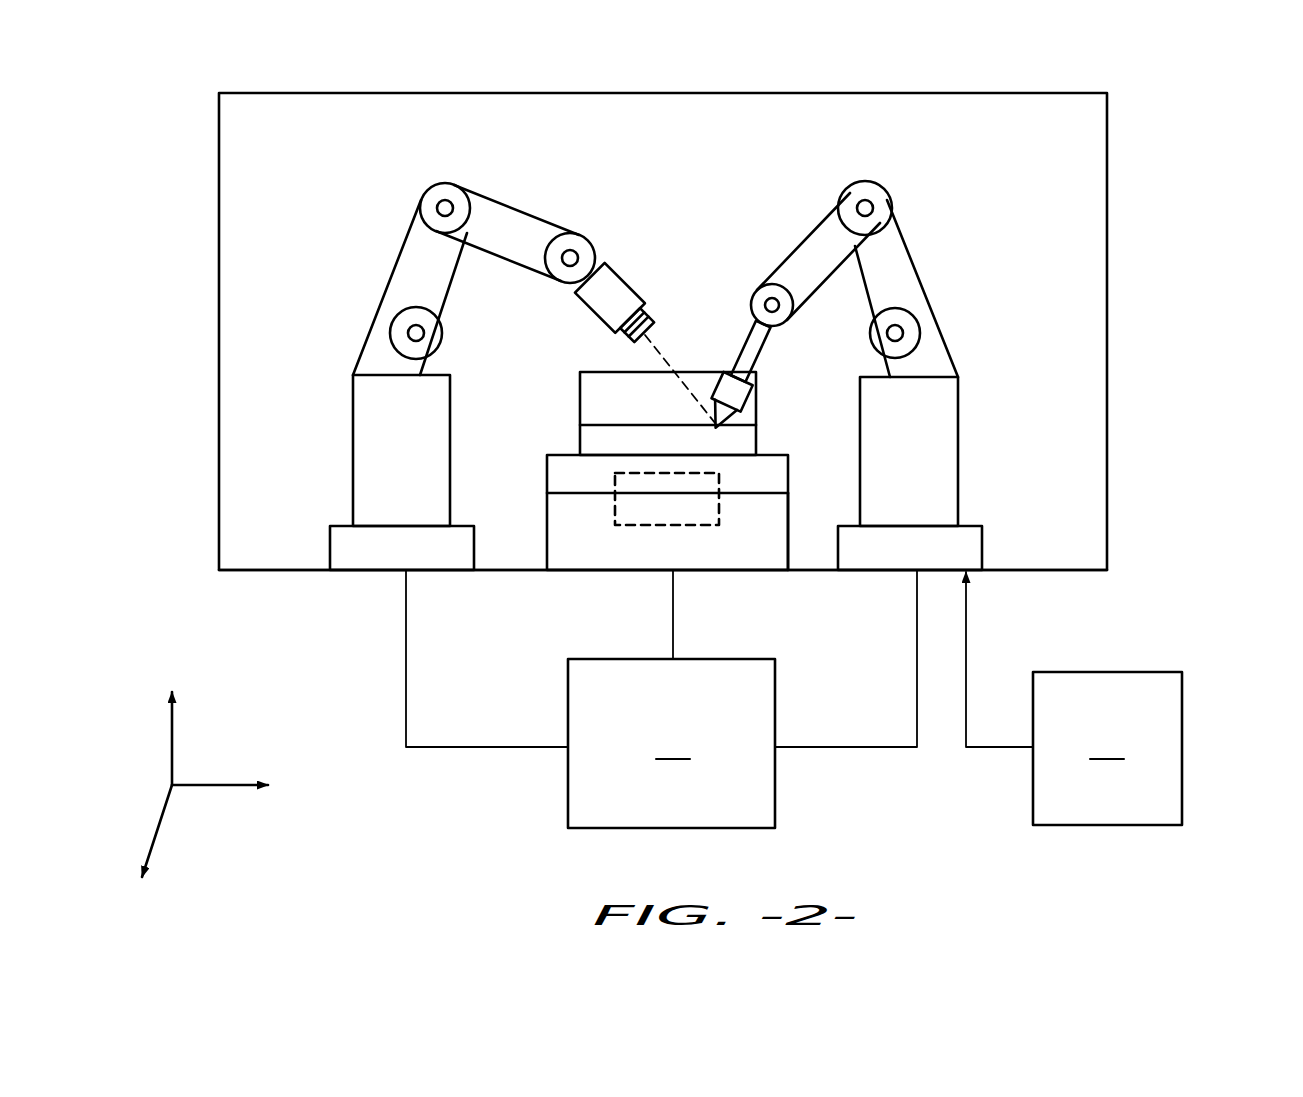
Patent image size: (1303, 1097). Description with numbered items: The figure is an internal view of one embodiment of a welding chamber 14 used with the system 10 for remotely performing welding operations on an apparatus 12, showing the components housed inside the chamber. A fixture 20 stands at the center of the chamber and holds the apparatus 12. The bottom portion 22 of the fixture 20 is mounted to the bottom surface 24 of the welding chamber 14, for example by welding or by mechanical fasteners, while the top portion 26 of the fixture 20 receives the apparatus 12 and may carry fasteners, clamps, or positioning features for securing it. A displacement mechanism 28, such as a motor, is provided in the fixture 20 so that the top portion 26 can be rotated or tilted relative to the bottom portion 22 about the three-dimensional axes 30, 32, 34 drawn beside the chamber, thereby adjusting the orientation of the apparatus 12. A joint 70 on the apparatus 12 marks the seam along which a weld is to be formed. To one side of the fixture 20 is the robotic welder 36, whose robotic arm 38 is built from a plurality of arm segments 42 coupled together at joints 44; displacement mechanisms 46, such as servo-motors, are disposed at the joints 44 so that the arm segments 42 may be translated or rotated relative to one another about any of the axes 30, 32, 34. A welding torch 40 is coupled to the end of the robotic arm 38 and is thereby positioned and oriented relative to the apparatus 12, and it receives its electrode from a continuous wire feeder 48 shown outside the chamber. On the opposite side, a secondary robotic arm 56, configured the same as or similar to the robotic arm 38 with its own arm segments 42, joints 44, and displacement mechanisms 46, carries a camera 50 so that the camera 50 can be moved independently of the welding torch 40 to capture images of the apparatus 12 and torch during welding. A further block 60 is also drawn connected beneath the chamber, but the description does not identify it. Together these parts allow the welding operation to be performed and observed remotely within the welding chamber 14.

The system 10 is at (1220, 202).
The apparatus 12 is at (578, 398).
The welding chamber 14 is at (218, 308).
The fixture 20 is at (547, 475).
The bottom portion 22 is at (790, 547).
The bottom surface 24 is at (520, 565).
The top portion 26 is at (790, 472).
The displacement mechanism 28 is at (695, 525).
The axis 30 is at (212, 785).
The axis 32 is at (160, 825).
The axis 34 is at (172, 737).
The robotic welder 36 is at (940, 238).
The robotic arm 38 is at (885, 178).
The welding torch 40 is at (742, 350).
The arm segments 42 is at (362, 368).
The joints 44 is at (447, 184).
The displacement mechanisms 46 is at (445, 205).
The continuous wire feeder 48 is at (1074, 698).
The camera 50 is at (625, 283).
The secondary robotic arm 56 is at (388, 212).
The controller 60 is at (661, 699).
The joint 70 is at (605, 425).